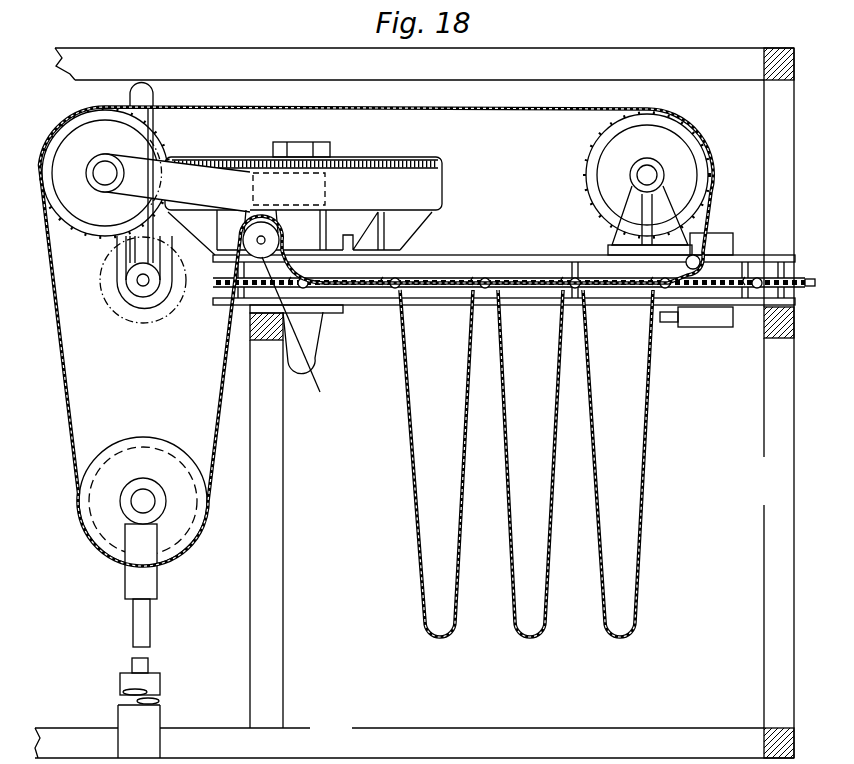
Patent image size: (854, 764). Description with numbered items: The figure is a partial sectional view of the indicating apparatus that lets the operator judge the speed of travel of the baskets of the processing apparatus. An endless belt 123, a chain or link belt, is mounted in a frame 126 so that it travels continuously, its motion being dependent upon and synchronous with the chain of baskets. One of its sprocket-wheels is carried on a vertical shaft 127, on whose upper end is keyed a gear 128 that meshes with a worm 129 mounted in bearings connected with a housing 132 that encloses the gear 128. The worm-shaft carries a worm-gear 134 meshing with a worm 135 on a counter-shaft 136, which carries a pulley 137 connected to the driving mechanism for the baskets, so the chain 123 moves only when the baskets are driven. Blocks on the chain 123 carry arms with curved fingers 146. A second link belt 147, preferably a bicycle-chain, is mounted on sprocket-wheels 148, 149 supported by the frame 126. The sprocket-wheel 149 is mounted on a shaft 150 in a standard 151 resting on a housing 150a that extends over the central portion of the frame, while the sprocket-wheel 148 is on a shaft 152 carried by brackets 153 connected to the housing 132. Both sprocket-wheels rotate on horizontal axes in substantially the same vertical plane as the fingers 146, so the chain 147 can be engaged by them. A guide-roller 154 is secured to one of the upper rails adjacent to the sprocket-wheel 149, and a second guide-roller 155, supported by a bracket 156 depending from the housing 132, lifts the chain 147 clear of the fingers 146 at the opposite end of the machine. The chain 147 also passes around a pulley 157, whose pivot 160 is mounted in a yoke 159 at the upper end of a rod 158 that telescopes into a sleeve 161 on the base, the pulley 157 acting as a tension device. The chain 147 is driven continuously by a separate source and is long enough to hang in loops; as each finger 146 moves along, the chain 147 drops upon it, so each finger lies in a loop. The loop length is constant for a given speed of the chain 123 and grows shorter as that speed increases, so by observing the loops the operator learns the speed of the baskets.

The endless belt 123 is at (618, 290).
The frame 126 is at (760, 342).
The vertical shaft 127 is at (298, 147).
The gear 128 is at (408, 157).
The worm 129 is at (328, 188).
The housing 132 is at (300, 221).
The worm-gear 134 is at (152, 100).
The worm 135 is at (157, 297).
The counter-shaft 136 is at (145, 285).
The pulley 137 is at (110, 307).
The finger 146 is at (653, 285).
The link belt 147 is at (507, 108).
The sprocket-wheel 148 is at (105, 173).
The sprocket-wheel 149 is at (647, 175).
The shaft 150 is at (645, 176).
The housing 150a is at (506, 258).
The standard 151 is at (640, 236).
The shaft 152 is at (105, 173).
The bracket 153 is at (169, 176).
The guide-roller 154 is at (697, 288).
The second guide-roller 155 is at (310, 329).
The bracket 156 is at (261, 234).
The pulley 157 is at (164, 501).
The rod 158 is at (133, 618).
The yoke 159 is at (142, 580).
The pivot 160 is at (141, 501).
The sleeve 161 is at (160, 680).